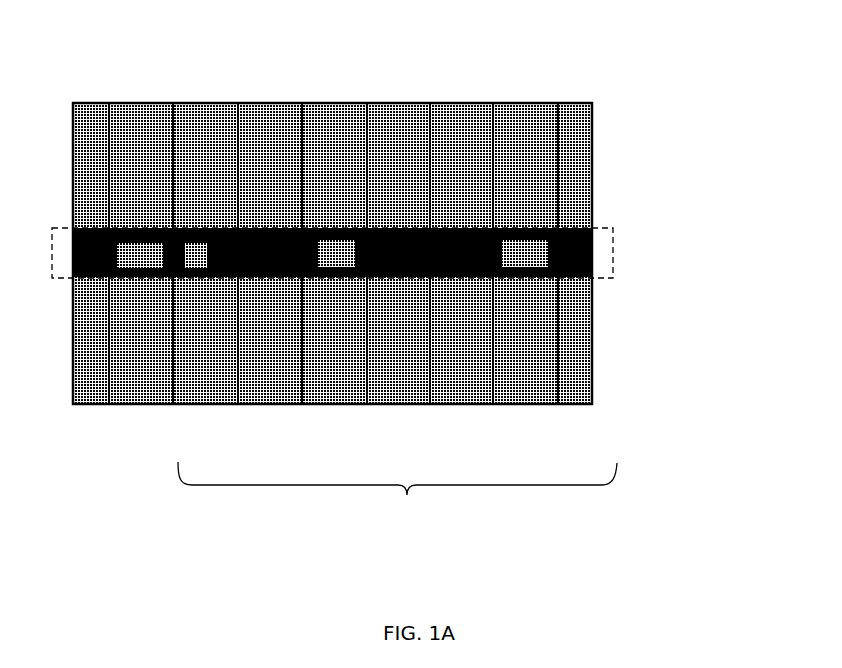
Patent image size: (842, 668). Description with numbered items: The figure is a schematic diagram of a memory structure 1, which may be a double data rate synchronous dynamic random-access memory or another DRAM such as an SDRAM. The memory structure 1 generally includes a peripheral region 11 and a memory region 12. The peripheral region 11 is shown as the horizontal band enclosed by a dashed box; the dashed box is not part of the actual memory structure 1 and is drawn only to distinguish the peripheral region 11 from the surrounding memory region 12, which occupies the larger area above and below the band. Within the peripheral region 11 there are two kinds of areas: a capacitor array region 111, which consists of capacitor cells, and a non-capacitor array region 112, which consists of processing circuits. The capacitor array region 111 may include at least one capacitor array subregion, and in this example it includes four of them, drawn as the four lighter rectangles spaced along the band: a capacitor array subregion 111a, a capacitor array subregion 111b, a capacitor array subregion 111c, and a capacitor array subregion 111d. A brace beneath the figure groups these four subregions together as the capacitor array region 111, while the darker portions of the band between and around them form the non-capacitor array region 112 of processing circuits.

The memory structure 1 is at (348, 88).
The peripheral region 11 is at (602, 252).
The memory region 12 is at (578, 357).
The capacitor array region 111 is at (397, 519).
The capacitor array subregion 111a is at (138, 254).
The capacitor array subregion 111b is at (196, 255).
The capacitor array subregion 111c is at (336, 255).
The capacitor array subregion 111d is at (525, 250).
The non-capacitor array region 112 is at (448, 228).